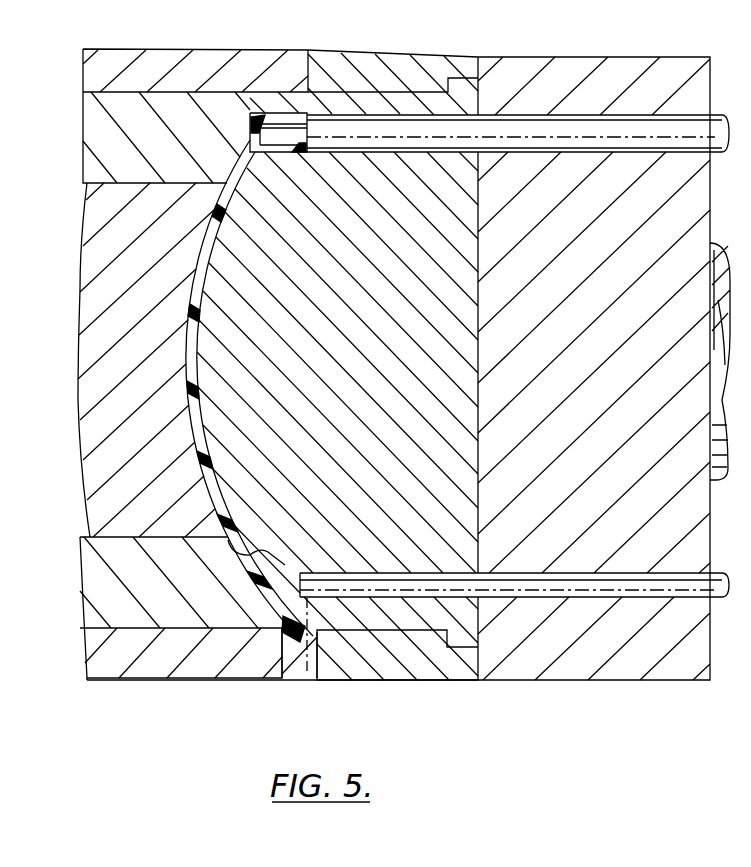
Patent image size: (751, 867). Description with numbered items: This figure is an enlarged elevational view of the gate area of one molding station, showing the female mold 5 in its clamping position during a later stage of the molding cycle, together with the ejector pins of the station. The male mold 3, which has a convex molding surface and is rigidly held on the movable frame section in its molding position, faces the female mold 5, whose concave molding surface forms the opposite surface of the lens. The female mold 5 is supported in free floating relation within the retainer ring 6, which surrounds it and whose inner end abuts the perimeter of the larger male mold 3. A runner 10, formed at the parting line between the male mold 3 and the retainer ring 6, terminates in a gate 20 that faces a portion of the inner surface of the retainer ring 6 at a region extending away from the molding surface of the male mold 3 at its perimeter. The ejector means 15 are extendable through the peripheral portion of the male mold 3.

The male mold 3 is at (378, 319).
The female mold 5 is at (138, 359).
The retainer ring 6 is at (93, 133).
The runner 10 is at (307, 665).
The ejector means 15 is at (548, 120).
The gate 20 is at (232, 545).